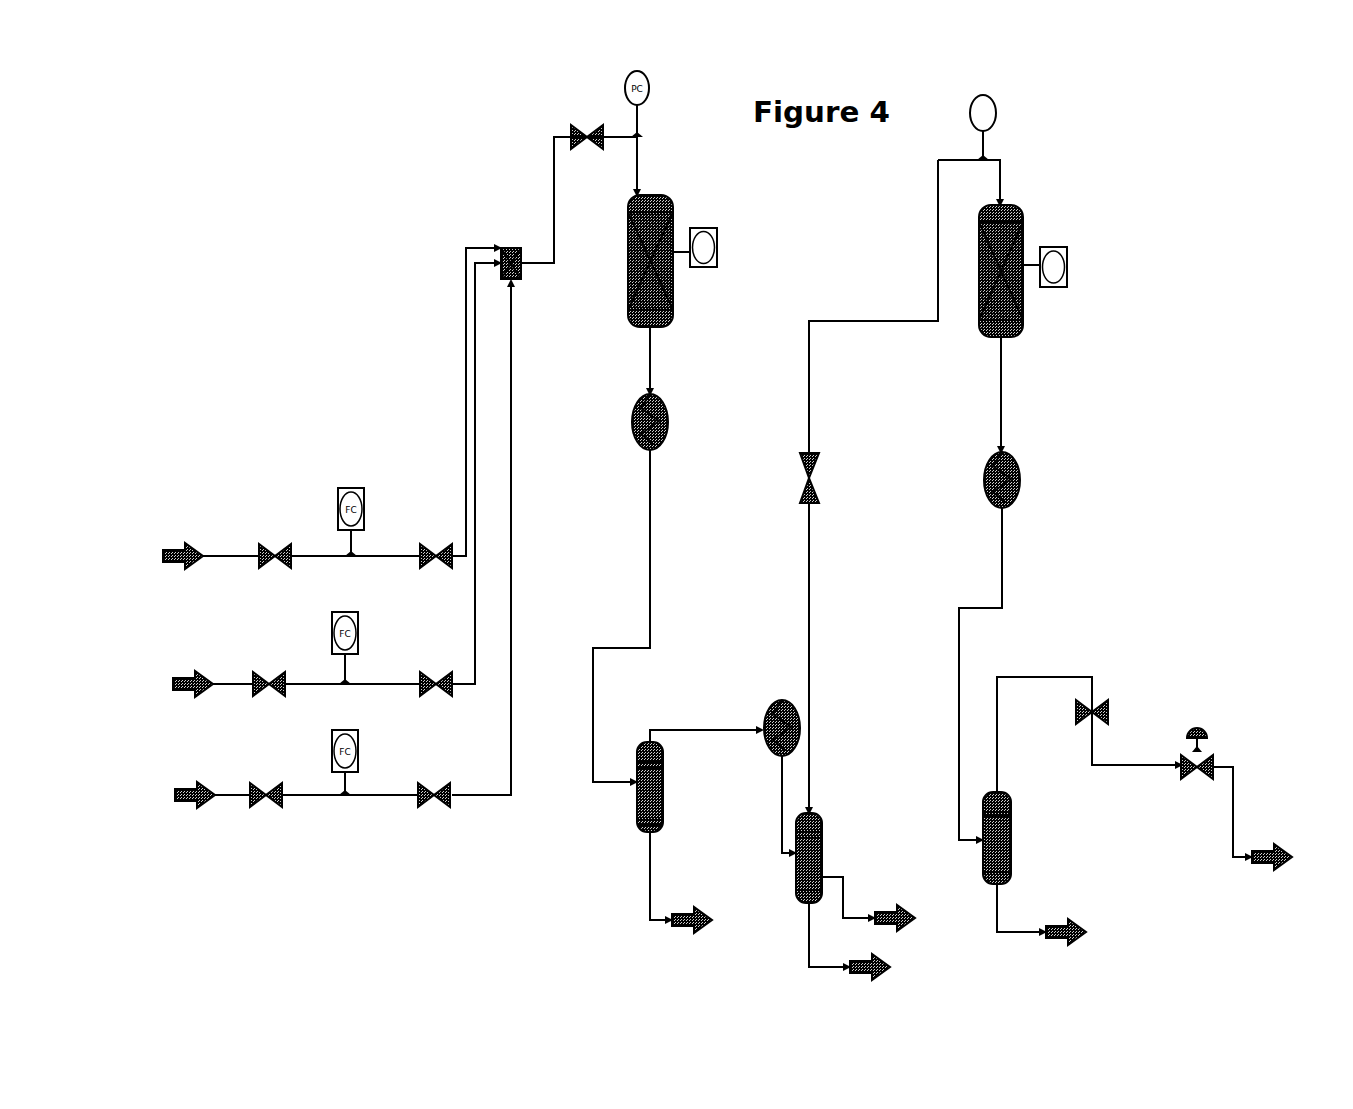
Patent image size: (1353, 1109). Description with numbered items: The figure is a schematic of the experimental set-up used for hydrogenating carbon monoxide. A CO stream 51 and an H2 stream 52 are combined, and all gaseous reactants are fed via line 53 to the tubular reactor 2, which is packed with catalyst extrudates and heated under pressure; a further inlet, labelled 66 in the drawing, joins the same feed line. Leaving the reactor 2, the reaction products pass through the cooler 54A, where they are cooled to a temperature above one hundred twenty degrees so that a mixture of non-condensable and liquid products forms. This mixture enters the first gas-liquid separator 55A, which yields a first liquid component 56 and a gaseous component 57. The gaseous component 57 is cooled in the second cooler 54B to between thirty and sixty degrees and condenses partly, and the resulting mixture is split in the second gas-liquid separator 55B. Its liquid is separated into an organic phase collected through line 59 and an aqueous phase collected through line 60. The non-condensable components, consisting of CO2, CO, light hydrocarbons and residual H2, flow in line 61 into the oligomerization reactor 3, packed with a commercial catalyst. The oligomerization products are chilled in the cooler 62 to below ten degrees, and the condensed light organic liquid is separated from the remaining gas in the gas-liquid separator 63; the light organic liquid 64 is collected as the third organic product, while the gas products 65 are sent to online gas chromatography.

The tubular reactor 2 is at (683, 243).
The oligomerization reactor 3 is at (1039, 216).
The CO stream 51 is at (326, 544).
The H2 stream 52 is at (298, 480).
The line 53 is at (552, 208).
The cooler 54A is at (685, 388).
The second cooler 54B is at (774, 689).
The first gas-liquid separator 55A is at (674, 652).
The second gas-liquid separator 55B is at (842, 813).
The first liquid component 56 is at (696, 908).
The gaseous component 57 is at (706, 717).
The line 59 is at (898, 893).
The line 60 is at (877, 941).
The line 61 is at (869, 486).
The cooler 62 is at (966, 422).
The gas-liquid separator 63 is at (1028, 700).
The light organic liquid 64 is at (1091, 925).
The gas products 65 is at (1152, 750).
The CO2 feed stream 66 is at (314, 408).